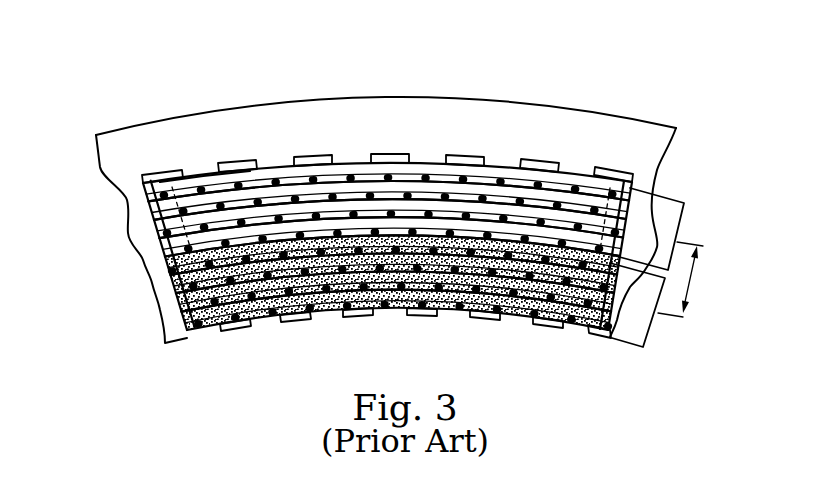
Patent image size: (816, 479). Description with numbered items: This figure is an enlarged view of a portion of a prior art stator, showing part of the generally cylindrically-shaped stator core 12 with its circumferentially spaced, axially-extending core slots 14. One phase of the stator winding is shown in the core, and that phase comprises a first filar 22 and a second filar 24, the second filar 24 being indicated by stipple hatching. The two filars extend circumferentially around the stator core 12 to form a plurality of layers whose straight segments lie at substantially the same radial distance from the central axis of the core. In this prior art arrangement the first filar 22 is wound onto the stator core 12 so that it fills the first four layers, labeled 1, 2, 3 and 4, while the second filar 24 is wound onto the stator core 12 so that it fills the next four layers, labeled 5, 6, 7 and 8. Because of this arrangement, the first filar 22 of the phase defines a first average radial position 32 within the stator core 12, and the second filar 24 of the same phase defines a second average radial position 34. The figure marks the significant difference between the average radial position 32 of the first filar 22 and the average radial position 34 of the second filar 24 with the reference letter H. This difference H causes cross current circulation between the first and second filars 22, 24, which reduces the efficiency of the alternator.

The first ceramic layer 1 is at (158, 205).
The second ceramic layer 2 is at (163, 223).
The third ceramic layer 3 is at (169, 241).
The fourth ceramic layer 4 is at (174, 259).
The fifth ceramic layer 5 is at (180, 277).
The sixth ceramic layer 6 is at (185, 295).
The seventh ceramic layer 7 is at (190, 313).
The eighth ceramic layer 8 is at (196, 331).
The stator core 12 is at (507, 99).
The core slots 14 is at (237, 162).
The first filar 22 is at (196, 166).
The second filar 24 is at (258, 334).
The first average radial position 32 is at (687, 240).
The second average radial position 34 is at (668, 318).
The difference between average radial positions H is at (688, 283).